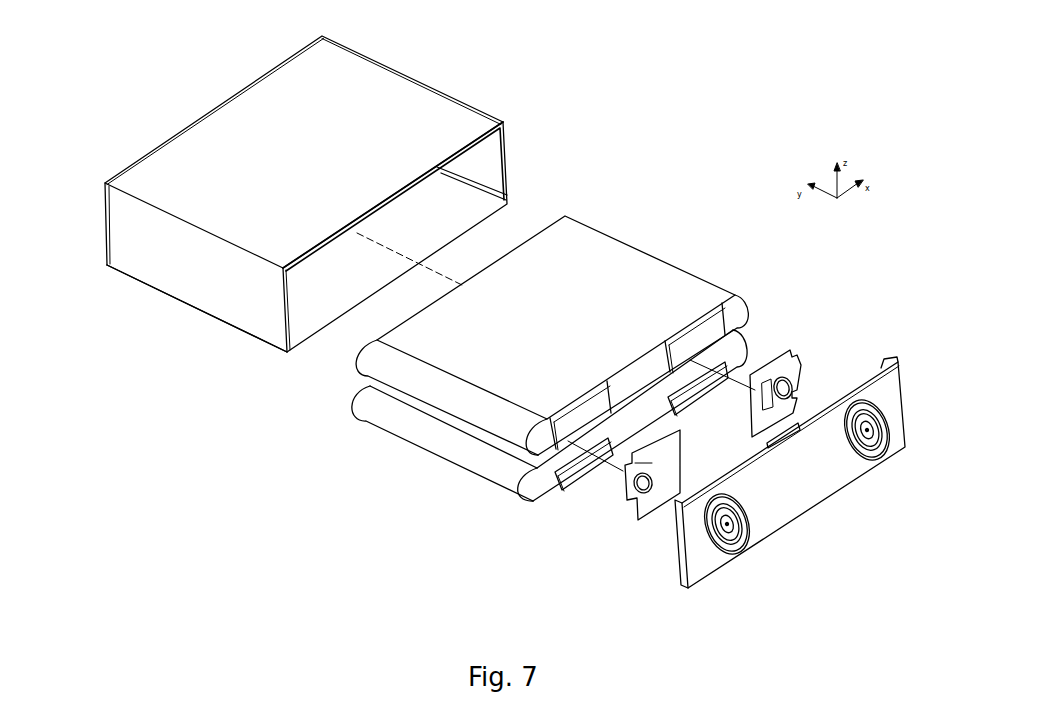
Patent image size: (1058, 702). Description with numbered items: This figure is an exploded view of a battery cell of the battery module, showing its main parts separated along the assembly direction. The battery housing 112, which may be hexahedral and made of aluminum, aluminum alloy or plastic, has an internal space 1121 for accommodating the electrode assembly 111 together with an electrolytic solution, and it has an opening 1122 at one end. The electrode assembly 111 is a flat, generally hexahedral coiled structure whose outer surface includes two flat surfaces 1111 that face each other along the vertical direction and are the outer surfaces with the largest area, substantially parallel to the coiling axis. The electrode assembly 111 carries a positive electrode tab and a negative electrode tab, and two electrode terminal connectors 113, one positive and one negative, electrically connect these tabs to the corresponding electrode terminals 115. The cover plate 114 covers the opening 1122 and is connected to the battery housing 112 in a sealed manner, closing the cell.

The electrode assembly 111 is at (553, 334).
The flat surface 1111 is at (577, 262).
The battery housing 112 is at (424, 101).
The internal space 1121 is at (303, 318).
The opening 1122 is at (510, 147).
The electrode terminal connector 113 is at (787, 368).
The cover plate 114 is at (873, 388).
The electrode terminal 115 is at (877, 448).